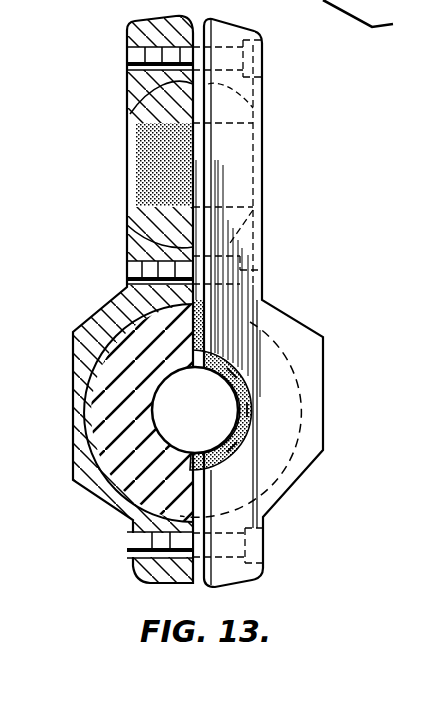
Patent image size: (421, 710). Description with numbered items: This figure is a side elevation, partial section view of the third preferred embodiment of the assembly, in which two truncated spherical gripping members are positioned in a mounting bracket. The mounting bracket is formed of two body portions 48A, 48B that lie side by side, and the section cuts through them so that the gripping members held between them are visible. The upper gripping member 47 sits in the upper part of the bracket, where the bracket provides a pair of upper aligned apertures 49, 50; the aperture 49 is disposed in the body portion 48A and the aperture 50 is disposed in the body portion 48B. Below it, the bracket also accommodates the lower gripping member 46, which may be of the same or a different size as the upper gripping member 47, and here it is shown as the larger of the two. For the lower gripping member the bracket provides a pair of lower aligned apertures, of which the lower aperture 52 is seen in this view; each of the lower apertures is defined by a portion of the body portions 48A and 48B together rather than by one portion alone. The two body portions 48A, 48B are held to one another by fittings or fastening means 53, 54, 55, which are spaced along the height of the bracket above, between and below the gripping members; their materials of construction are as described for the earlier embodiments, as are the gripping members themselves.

The lower gripping member 46 is at (263, 357).
The upper gripping member 47 is at (232, 110).
The body portion 48A is at (228, 18).
The body portion 48B is at (133, 28).
The upper aligned aperture 49 is at (268, 173).
The upper aligned aperture 50 is at (111, 178).
The lower aligned aperture 52 is at (223, 430).
The fastening means 53 is at (265, 56).
The fastening means 54 is at (265, 269).
The fastening means 55 is at (267, 542).